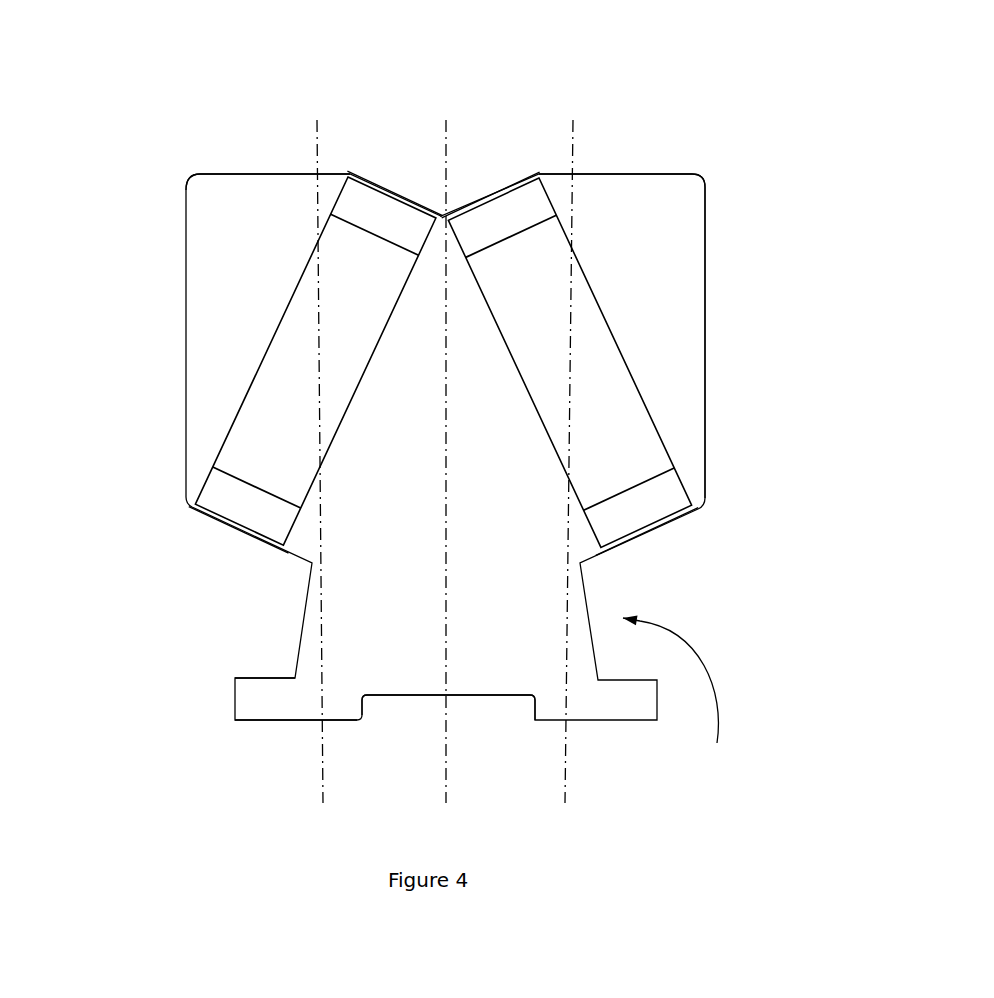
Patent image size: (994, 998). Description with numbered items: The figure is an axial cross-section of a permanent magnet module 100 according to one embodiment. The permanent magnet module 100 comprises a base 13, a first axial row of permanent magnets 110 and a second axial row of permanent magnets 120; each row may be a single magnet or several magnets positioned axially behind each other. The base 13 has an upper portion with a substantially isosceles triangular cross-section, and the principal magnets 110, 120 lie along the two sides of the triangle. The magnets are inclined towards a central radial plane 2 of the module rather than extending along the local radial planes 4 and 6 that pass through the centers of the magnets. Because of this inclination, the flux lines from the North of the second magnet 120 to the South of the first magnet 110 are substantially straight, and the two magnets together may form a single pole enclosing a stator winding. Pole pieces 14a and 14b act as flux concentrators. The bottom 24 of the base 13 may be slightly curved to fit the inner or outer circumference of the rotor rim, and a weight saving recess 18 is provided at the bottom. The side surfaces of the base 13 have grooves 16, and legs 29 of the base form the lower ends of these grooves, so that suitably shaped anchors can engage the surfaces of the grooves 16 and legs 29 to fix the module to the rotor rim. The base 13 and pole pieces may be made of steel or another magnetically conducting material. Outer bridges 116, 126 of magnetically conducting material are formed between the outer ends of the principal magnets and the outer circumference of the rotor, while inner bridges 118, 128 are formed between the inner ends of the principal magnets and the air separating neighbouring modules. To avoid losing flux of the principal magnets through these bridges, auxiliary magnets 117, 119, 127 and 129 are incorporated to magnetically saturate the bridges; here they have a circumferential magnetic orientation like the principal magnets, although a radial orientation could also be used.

The permanent magnet module 100 is at (438, 163).
The first axial row of permanent magnets 110 is at (606, 321).
The outer bridge 116 is at (530, 177).
The auxiliary magnet 117 is at (497, 193).
The inner bridge 118 is at (695, 507).
The auxiliary magnet 119 is at (643, 502).
The second axial row of permanent magnets 120 is at (245, 322).
The outer bridge 126 is at (330, 177).
The auxiliary magnet 127 is at (378, 212).
The inner bridge 128 is at (227, 523).
The auxiliary magnet 129 is at (243, 500).
The pole piece 14a is at (230, 283).
The pole piece 14b is at (660, 262).
The base 13 is at (397, 485).
The legs 29 is at (267, 703).
The bottom of the base 24 is at (287, 720).
The weight saving recess 18 is at (405, 710).
The local radial plane 6 is at (322, 765).
The central radial plane 2 is at (448, 785).
The local radial plane 4 is at (567, 778).
The grooves 16 is at (676, 701).